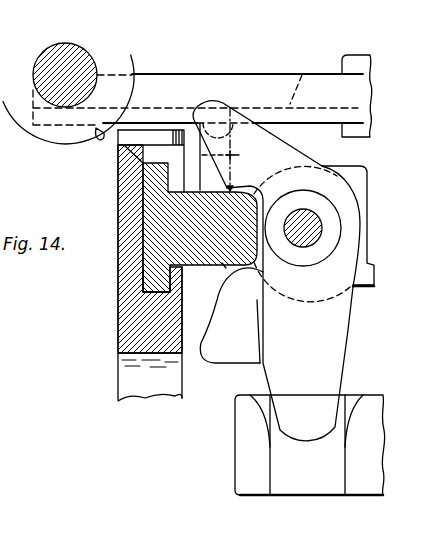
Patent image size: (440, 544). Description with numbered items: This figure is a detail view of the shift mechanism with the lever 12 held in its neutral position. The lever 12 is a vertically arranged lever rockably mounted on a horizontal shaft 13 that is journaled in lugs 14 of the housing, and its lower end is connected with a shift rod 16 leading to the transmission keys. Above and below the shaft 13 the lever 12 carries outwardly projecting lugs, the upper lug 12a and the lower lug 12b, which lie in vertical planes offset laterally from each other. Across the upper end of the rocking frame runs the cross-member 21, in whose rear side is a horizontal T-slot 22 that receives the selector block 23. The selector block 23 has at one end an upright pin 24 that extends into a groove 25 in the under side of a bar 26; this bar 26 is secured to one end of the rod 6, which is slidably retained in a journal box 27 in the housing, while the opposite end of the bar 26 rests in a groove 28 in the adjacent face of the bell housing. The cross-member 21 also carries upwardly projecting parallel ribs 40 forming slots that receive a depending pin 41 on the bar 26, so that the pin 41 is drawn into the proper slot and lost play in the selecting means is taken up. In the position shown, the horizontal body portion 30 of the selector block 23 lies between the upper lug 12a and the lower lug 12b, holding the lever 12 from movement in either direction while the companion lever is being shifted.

The rod 6 is at (80, 44).
The journal box 27 is at (130, 52).
The bar 26 is at (195, 77).
The groove 28 is at (363, 92).
The groove 25 is at (302, 75).
The upright pin 24 is at (235, 149).
The depending pin 41 is at (100, 135).
The ribs 40 is at (125, 146).
The cross-member 21 is at (118, 333).
The selector block 23 is at (157, 219).
The T-slot 22 is at (143, 280).
The body portion 30 is at (219, 262).
The upper lug 12a is at (222, 103).
The lever 12 is at (355, 318).
The lower lug 12b is at (217, 350).
The lugs 14 is at (360, 176).
The horizontal shaft 13 is at (303, 228).
The shift rod 16 is at (377, 462).